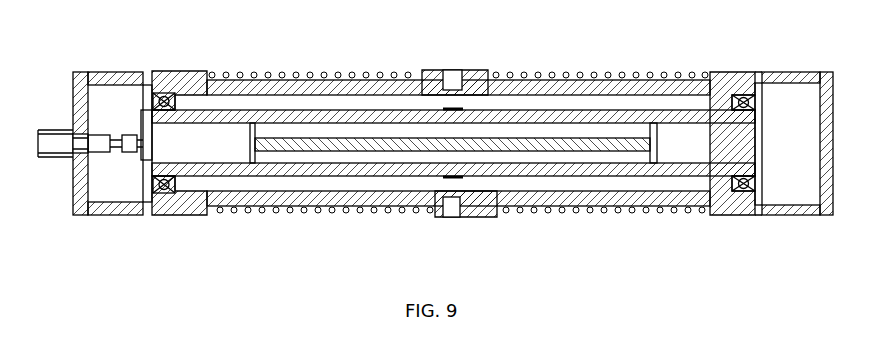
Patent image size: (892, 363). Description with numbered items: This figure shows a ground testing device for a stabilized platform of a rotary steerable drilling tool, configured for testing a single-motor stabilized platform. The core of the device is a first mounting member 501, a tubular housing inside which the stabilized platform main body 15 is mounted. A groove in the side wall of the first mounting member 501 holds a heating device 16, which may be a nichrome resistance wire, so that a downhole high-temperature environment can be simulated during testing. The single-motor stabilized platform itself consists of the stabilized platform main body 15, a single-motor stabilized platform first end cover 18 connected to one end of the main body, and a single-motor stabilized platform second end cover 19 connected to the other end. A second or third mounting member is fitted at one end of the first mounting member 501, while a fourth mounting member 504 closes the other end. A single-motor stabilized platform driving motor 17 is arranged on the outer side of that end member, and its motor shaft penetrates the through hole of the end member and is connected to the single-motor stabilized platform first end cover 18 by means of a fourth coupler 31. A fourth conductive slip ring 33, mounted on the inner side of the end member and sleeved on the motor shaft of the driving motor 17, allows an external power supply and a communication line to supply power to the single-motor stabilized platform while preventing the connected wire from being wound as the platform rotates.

The fourth conductive slip ring 33 is at (104, 140).
The single-motor stabilized platform first end cover 18 is at (162, 98).
The first mounting member 501 is at (259, 88).
The heating device 16 is at (333, 116).
The stabilized platform main body 15 is at (499, 116).
The single-motor stabilized platform second end cover 19 is at (755, 122).
The fourth mounting member 504 is at (826, 122).
The single-motor stabilized platform driving motor 17 is at (64, 148).
The fourth coupler 31 is at (128, 150).